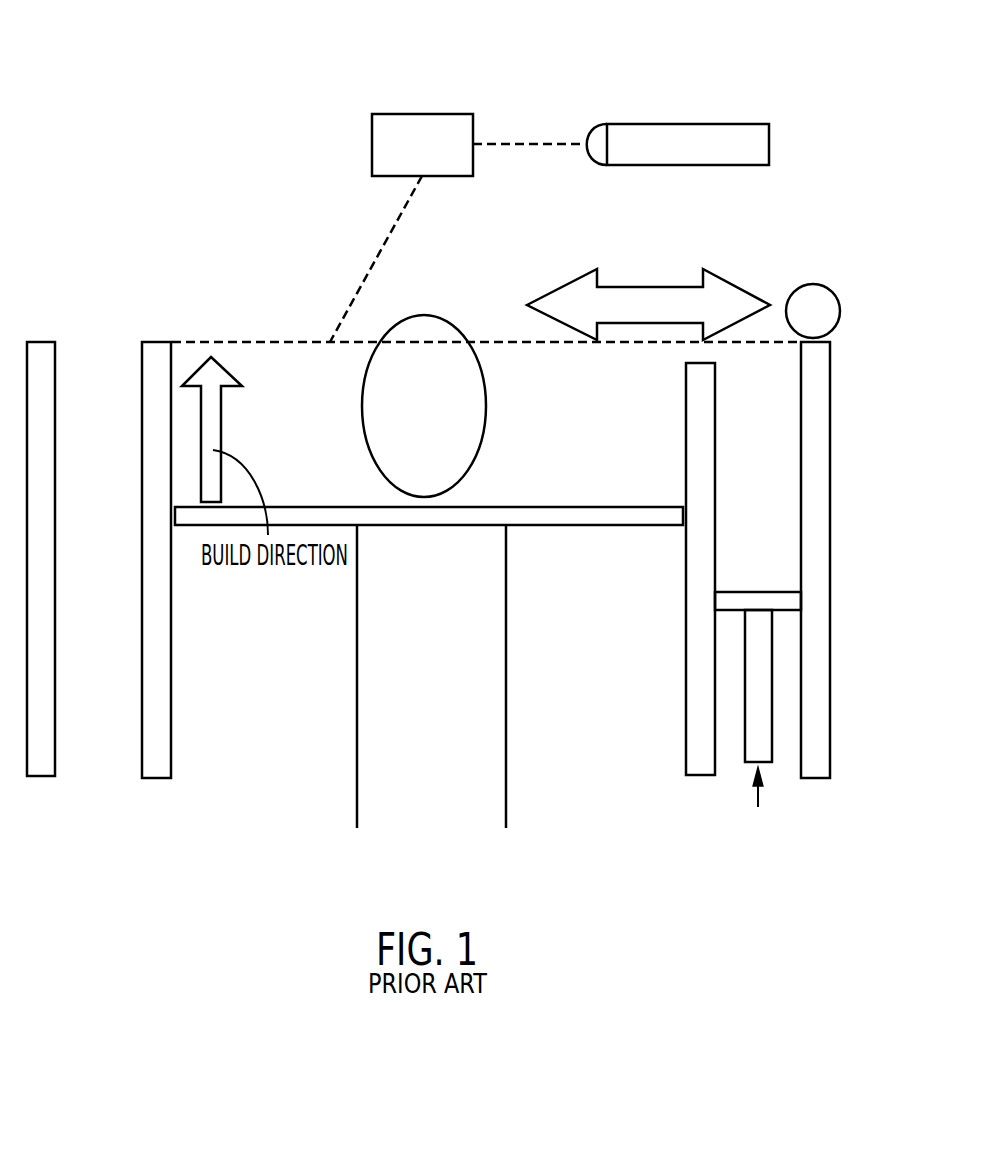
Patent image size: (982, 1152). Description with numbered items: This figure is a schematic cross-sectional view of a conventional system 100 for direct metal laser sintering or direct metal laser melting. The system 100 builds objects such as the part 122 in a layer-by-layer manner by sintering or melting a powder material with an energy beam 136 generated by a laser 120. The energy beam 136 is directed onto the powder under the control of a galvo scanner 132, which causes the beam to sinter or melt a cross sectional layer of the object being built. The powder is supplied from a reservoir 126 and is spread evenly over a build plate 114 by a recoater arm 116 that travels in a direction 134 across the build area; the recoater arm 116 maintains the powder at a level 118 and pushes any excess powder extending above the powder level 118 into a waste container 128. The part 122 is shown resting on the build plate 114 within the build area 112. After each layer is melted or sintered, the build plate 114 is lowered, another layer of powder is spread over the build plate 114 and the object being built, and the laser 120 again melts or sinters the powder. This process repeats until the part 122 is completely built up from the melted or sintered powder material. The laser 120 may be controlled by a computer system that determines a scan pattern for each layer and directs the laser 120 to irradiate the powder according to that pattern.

The system 100 is at (118, 74).
The build chamber / powder bed 112 is at (532, 377).
The build plate 114 is at (625, 506).
The recoater arm 116 is at (813, 285).
The powder level 118 is at (235, 340).
The laser 120 is at (648, 124).
The part 122 is at (362, 412).
The reservoir 126 is at (782, 445).
The waste container 128 is at (118, 660).
The galvo scanner 132 is at (422, 114).
The direction 134 is at (568, 282).
The energy beam 136 is at (372, 257).